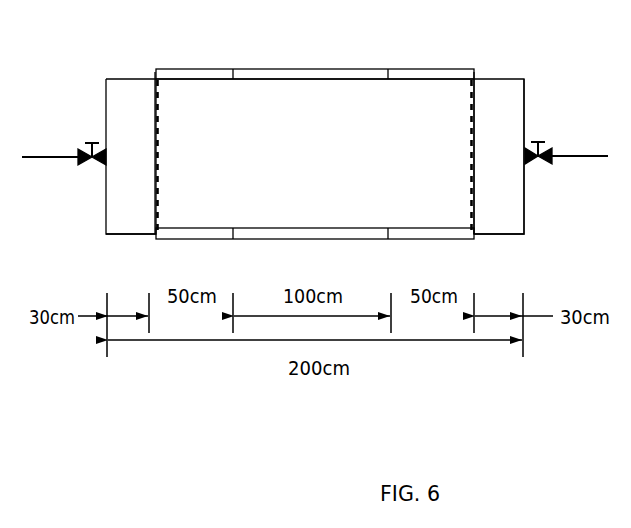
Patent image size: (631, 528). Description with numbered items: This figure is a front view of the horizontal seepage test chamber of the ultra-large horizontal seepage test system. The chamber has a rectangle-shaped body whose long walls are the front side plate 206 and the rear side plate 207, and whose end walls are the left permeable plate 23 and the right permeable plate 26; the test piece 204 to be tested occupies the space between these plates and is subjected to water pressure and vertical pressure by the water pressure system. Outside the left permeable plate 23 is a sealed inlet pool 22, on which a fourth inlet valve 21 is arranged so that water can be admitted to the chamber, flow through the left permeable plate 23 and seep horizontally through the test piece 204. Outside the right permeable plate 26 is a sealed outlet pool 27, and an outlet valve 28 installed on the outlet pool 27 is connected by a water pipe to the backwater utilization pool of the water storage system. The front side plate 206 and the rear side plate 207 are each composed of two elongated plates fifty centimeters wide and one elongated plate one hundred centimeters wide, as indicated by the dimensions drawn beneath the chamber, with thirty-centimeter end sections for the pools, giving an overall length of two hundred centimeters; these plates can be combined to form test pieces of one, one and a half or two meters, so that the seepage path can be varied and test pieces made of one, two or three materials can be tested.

The fourth inlet valve 21 is at (64, 171).
The inlet pool 22 is at (131, 156).
The left permeable plate 23 is at (154, 72).
The right permeable plate 26 is at (475, 71).
The outlet pool 27 is at (499, 156).
The outlet valve 28 is at (566, 171).
The test piece 204 is at (315, 156).
The front side plate 206 is at (315, 251).
The rear side plate 207 is at (315, 52).